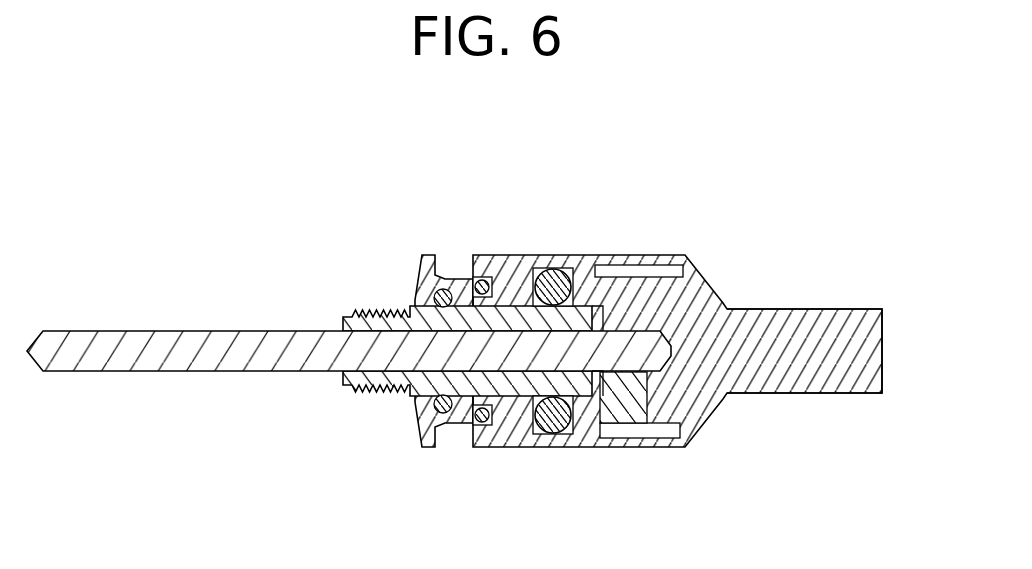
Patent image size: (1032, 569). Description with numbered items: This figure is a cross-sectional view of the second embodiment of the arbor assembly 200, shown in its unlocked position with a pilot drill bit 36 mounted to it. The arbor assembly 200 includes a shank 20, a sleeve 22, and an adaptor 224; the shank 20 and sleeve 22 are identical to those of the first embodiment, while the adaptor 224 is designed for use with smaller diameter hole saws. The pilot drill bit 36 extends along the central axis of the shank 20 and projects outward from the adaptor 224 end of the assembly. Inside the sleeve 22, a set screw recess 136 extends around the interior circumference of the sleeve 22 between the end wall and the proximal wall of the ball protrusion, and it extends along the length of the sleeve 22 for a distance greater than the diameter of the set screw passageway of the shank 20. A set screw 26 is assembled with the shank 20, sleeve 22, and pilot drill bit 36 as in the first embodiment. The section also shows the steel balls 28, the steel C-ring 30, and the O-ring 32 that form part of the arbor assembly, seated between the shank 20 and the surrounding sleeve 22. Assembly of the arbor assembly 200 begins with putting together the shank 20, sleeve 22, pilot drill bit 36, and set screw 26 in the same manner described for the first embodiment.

The arbor assembly 200 is at (454, 300).
The shank 20 is at (772, 288).
The sleeve 22 is at (507, 253).
The set screw recess 136 is at (648, 268).
The adaptor 224 is at (362, 302).
The pilot drill bit 36 is at (170, 340).
The O-ring 32 is at (450, 428).
The steel C-ring 30 is at (484, 426).
The steel balls 28 is at (550, 438).
The set screw 26 is at (623, 393).